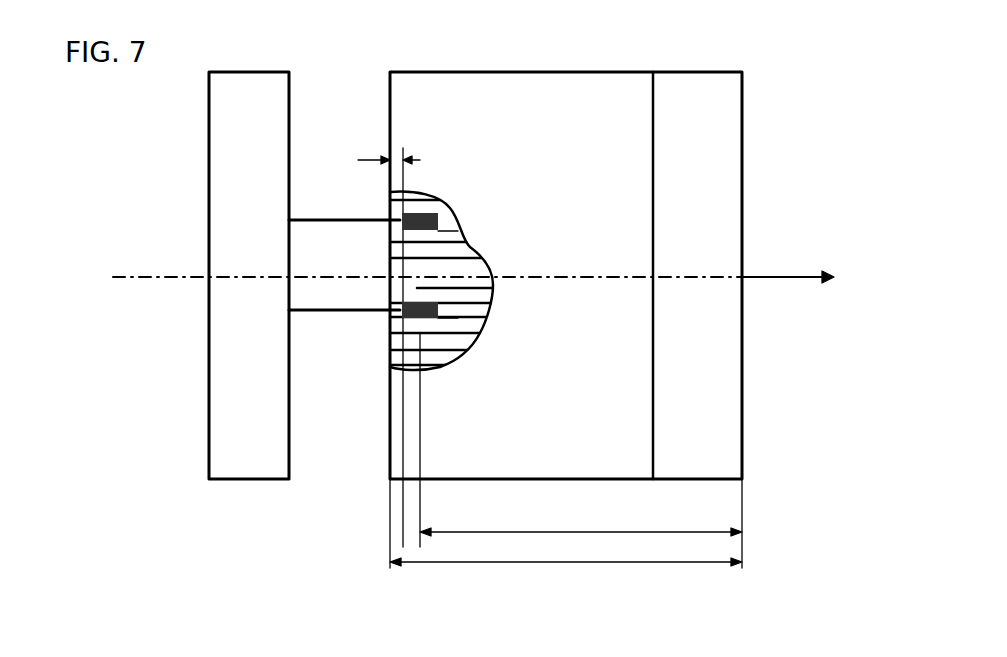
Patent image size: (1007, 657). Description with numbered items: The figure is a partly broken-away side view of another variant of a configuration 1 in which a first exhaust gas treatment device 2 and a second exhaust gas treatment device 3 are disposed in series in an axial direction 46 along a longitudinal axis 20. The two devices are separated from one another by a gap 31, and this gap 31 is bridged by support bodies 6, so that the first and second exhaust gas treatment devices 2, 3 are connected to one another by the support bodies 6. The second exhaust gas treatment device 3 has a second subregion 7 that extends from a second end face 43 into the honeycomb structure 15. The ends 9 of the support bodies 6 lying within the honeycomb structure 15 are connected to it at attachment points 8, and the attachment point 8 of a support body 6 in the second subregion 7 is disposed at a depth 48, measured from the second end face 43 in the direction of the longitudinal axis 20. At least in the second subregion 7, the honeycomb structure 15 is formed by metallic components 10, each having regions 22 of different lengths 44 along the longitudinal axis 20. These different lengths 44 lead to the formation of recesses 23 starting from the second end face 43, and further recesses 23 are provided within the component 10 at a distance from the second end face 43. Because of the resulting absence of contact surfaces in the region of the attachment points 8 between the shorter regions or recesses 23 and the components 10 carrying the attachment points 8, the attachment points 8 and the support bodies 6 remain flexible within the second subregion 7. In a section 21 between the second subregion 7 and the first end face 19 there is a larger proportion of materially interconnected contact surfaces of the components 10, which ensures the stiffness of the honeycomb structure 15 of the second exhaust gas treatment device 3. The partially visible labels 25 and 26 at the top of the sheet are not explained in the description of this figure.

The configuration 1 is at (152, 423).
The first exhaust gas treatment device 2 is at (225, 382).
The second exhaust gas treatment device 3 is at (543, 472).
The support bodies 6 is at (327, 313).
The second subregion 7 is at (467, 240).
The attachment points 8 is at (425, 212).
The ends 9 is at (440, 310).
The metallic components 10 is at (393, 363).
The honeycomb structure 15 is at (475, 100).
The first end face 19 is at (743, 160).
The longitudinal axis 20 is at (145, 275).
The section 21 is at (708, 83).
The regions 22 is at (402, 348).
The recesses 23 is at (443, 227).
The element 25 is at (203, 7).
The element 26 is at (288, 7).
The gap 31 is at (302, 98).
The second end face 43 is at (388, 97).
The lengths 44 is at (566, 566).
The axial direction 46 is at (788, 277).
The depth 48 is at (382, 158).